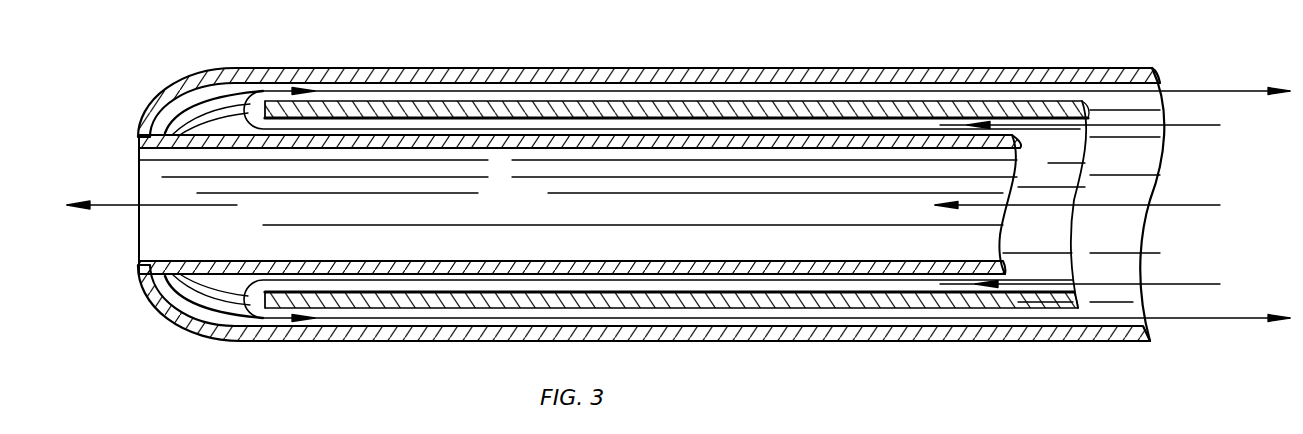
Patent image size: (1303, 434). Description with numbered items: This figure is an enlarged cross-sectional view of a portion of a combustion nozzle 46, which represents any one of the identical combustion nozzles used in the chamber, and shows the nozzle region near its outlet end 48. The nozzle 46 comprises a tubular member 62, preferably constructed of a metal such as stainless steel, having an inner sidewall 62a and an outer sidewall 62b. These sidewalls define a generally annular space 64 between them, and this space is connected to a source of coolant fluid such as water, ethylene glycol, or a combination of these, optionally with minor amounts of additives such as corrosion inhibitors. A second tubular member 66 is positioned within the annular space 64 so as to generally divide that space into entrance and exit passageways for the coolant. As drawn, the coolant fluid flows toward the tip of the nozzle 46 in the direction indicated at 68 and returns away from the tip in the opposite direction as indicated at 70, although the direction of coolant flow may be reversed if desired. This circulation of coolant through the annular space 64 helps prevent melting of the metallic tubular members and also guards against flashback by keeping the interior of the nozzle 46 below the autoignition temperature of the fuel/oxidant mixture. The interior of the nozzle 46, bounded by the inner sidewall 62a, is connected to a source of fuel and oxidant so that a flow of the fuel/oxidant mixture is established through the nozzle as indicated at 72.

The nozzle 46 is at (342, 55).
The outlet end 48 is at (138, 170).
The tubular member 62 is at (550, 68).
The inner sidewall 62a is at (502, 152).
The outer sidewall 62b is at (672, 74).
The annular space 64 is at (223, 104).
The tubular member 66 is at (742, 100).
The coolant fluid flow toward the tip 68 is at (1202, 127).
The coolant fluid flow away from the tip 70 is at (1233, 89).
The fuel/oxidant mixture flow 72 is at (1206, 204).